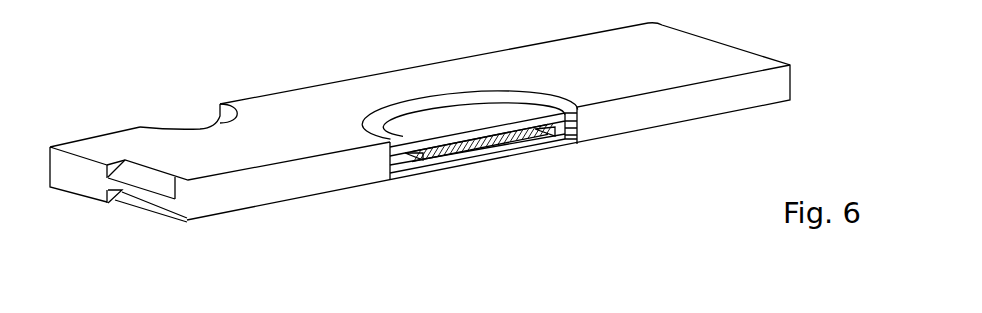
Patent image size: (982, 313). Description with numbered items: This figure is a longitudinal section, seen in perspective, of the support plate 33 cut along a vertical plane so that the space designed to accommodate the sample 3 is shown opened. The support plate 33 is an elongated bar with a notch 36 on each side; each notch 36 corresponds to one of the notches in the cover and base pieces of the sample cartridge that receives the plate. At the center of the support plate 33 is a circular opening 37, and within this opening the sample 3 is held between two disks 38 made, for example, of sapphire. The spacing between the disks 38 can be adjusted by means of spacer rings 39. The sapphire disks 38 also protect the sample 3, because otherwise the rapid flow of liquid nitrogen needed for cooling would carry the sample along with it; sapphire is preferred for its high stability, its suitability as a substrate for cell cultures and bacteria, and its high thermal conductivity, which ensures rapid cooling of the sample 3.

The support plate 33 is at (719, 138).
The notch 36 is at (197, 120).
The circular opening 37 is at (427, 86).
The disk 38 is at (440, 171).
The sample 3 is at (483, 161).
The spacer ring 39 is at (577, 111).